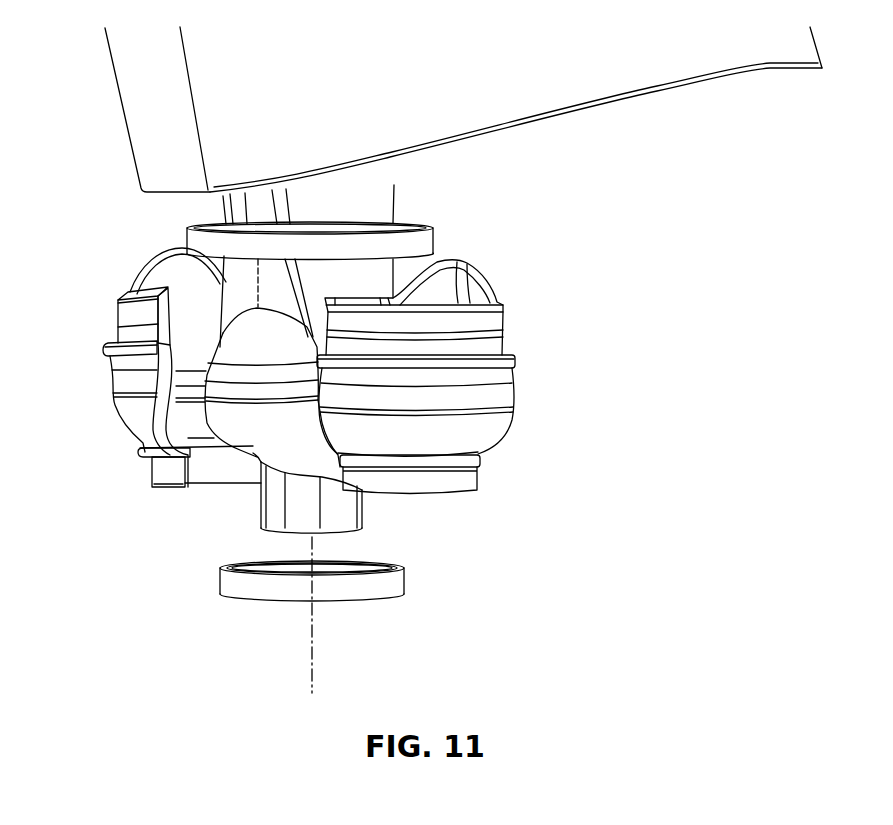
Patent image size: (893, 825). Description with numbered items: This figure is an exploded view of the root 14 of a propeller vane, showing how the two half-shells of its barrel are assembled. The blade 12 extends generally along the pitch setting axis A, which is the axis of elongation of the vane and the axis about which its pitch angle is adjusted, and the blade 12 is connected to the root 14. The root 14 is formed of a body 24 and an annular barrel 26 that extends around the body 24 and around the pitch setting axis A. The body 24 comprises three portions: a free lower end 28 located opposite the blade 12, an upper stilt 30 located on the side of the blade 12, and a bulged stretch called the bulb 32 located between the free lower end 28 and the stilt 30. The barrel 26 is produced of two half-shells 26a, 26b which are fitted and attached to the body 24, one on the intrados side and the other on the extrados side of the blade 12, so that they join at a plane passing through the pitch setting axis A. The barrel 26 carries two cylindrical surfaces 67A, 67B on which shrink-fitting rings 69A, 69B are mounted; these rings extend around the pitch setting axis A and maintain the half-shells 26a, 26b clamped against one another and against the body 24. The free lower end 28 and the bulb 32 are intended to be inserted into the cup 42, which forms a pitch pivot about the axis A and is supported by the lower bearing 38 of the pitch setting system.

The blade 12 is at (662, 98).
The root 14 is at (610, 288).
The body 24 is at (244, 511).
The annular barrel 26 is at (137, 495).
The half-shell 26a is at (117, 407).
The half-shell 26b is at (477, 437).
The free lower end 28 is at (350, 510).
The upper stilt 30 is at (372, 272).
The bulb 32 is at (247, 333).
The lower bearing 38 is at (487, 300).
The cup 42 is at (502, 395).
The cylindrical surface 67A is at (460, 478).
The cylindrical surface 67B is at (130, 312).
The shrink-fitting ring 69A is at (377, 583).
The shrink-fitting ring 69B is at (413, 238).
The pitch setting axis A is at (313, 665).